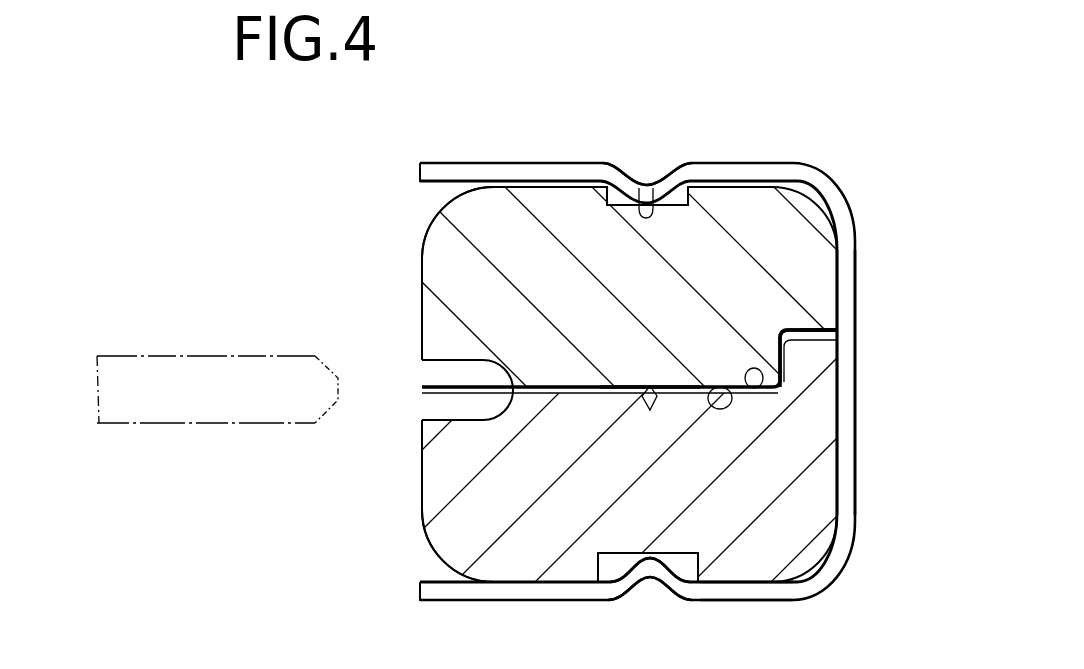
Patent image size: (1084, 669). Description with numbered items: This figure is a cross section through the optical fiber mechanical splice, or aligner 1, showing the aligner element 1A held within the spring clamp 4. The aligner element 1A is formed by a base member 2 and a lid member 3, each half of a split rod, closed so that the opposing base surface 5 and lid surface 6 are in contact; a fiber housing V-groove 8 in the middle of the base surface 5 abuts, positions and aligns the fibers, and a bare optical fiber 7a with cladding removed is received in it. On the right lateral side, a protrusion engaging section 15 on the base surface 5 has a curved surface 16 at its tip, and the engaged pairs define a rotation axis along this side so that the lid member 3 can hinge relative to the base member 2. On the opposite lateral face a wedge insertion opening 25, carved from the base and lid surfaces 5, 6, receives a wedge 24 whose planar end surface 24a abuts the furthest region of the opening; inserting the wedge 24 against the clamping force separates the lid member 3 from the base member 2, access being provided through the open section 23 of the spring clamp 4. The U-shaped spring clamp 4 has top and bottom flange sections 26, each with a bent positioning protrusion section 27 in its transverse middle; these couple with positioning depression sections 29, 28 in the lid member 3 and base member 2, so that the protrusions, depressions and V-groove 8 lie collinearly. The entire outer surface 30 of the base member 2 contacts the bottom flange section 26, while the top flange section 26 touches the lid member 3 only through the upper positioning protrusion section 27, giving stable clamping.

The optical fiber mechanical splice 1 is at (792, 163).
The aligner element 1A is at (412, 221).
The base member 2 is at (422, 468).
The lid member 3 is at (422, 257).
The spring clamp 4 is at (857, 232).
The base surface 5 is at (752, 383).
The lid surface 6 is at (712, 385).
The bare optical fiber 7a is at (640, 397).
The fiber housing V-groove 8 is at (648, 385).
The protrusion engaging section 15 is at (808, 364).
The curved surface 16 is at (838, 330).
The open section 23 is at (427, 557).
The wedge 24 is at (185, 355).
The planar end surface 24a is at (340, 402).
The wedge insertion opening 25 is at (440, 368).
The flange section 26 is at (420, 164).
The positioning protrusion section 27 is at (645, 186).
The positioning depression section 28 is at (612, 570).
The positioning depression section 29 is at (676, 200).
The outer surface 30 is at (735, 588).